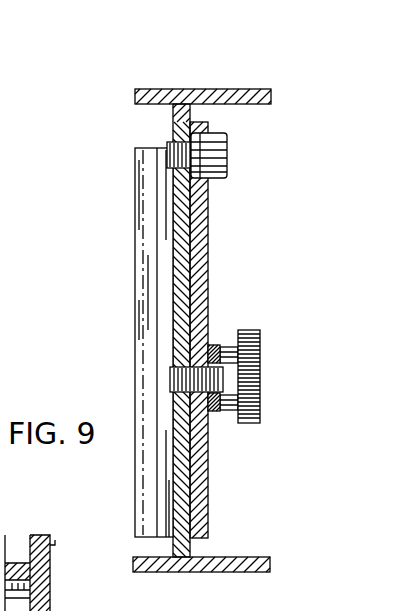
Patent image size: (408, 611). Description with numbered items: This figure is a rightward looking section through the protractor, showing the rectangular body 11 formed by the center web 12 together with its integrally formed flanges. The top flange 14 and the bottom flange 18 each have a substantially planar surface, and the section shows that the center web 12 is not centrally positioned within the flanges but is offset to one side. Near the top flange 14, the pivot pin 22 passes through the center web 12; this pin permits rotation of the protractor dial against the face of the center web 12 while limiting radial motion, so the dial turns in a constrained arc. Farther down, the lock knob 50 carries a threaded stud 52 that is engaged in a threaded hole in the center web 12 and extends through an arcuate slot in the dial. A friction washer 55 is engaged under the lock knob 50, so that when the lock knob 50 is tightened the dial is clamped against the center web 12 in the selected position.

The rectangular body 11 is at (198, 316).
The center web 12 is at (173, 551).
The top flange 14 is at (126, 88).
The bottom flange 18 is at (228, 572).
The pivot pin 22 is at (168, 149).
The lock knob 50 is at (244, 423).
The threaded stud 52 is at (172, 383).
The friction washer 55 is at (213, 345).